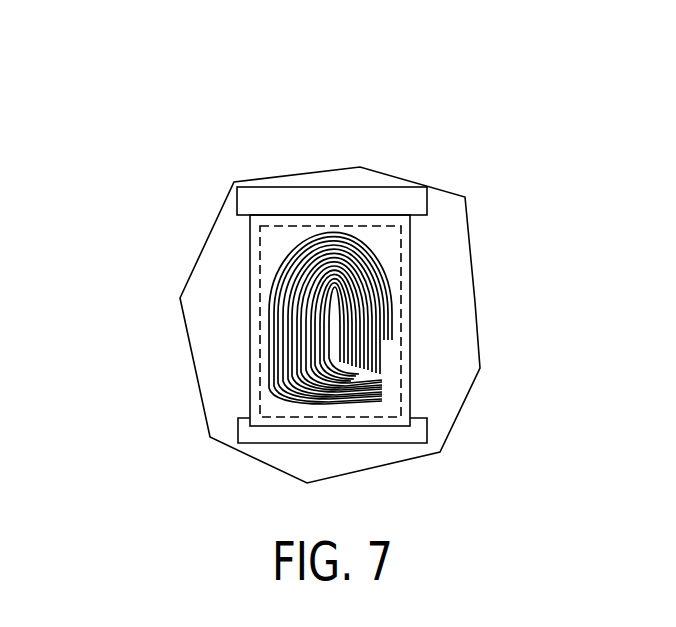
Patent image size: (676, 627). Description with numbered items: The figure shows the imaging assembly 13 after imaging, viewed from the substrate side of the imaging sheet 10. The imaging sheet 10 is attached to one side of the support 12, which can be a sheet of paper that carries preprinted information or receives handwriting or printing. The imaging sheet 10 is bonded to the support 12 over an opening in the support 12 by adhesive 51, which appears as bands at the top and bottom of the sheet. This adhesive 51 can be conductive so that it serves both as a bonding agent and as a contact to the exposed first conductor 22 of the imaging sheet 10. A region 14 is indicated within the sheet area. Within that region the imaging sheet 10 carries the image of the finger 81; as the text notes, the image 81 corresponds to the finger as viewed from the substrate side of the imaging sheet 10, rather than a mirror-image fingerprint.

The imaging assembly 13 is at (196, 143).
The support 12 is at (477, 300).
The imaging sheet 10 is at (238, 342).
The adhesive 51 is at (342, 187).
The first conductor 22 is at (238, 210).
The sensing area 14 is at (402, 242).
The image of the finger 81 is at (383, 355).